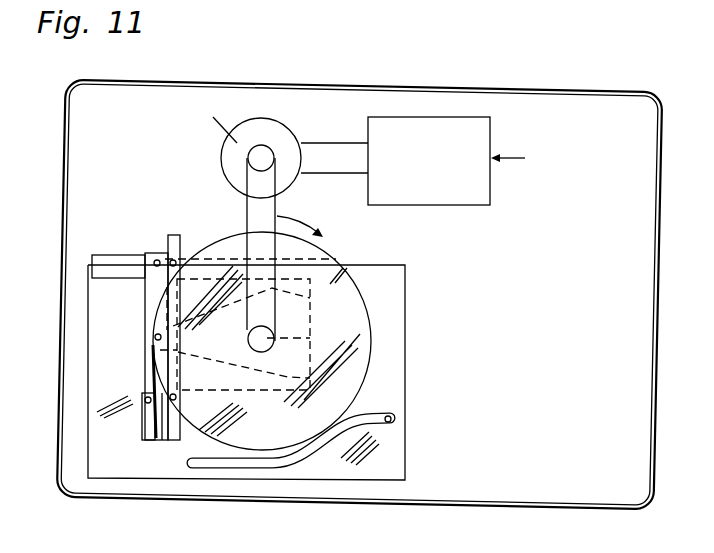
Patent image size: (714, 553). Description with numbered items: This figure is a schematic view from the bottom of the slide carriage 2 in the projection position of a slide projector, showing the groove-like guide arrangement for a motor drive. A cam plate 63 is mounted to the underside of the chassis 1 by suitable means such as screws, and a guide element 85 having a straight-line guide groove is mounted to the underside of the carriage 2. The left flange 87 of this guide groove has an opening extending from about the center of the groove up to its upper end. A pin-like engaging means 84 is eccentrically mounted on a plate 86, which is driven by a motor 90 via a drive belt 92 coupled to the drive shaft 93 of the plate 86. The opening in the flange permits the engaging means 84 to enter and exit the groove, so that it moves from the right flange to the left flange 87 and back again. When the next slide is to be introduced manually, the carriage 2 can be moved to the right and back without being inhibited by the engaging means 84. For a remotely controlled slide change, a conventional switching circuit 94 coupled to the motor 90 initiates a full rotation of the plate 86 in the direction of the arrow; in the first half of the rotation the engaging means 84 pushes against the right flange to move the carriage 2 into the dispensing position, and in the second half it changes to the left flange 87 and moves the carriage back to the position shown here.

The chassis 1 is at (480, 490).
The slide carriage 2 is at (400, 477).
The cam plate 63 is at (250, 380).
The pin-like engaging means 84 is at (155, 335).
The guide element 85 is at (167, 449).
The plate 86 is at (328, 413).
The left flange 87 is at (152, 388).
The motor 90 is at (287, 127).
The drive belt 92 is at (247, 212).
The drive shaft 93 is at (248, 338).
The switching circuit 94 is at (475, 205).